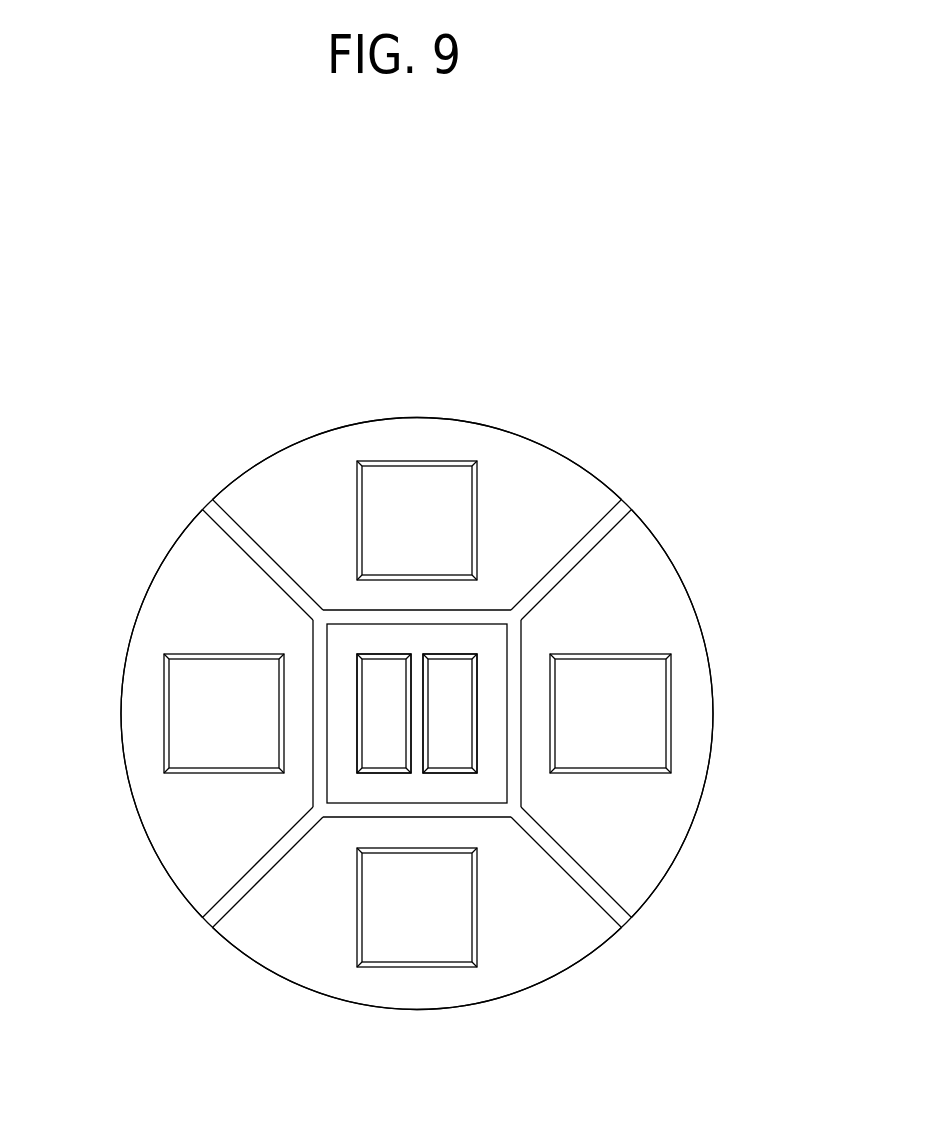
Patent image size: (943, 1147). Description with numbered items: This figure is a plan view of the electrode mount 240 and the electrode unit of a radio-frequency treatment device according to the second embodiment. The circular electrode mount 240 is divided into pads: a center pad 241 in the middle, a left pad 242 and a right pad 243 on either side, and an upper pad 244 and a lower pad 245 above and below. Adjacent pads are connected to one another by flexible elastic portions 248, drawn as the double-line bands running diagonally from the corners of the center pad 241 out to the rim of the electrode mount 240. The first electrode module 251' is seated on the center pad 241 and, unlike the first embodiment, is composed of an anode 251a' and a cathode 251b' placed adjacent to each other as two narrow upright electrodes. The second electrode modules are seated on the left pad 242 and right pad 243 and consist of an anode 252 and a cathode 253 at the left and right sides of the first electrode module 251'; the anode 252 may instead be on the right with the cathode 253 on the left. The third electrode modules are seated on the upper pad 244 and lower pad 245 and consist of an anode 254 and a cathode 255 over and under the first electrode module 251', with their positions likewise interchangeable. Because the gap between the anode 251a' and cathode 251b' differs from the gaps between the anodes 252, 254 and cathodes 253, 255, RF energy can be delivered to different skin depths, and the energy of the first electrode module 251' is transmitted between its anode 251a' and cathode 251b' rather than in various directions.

The electrode mount 240 is at (600, 477).
The center pad 241 is at (340, 637).
The left pad 242 is at (175, 592).
The right pad 243 is at (652, 600).
The upper pad 244 is at (545, 510).
The lower pad 245 is at (290, 940).
The flexible elastic portion 248 is at (215, 518).
The first electrode module 251' is at (601, 830).
The anode 251a' is at (559, 836).
The cathode 251b' is at (592, 783).
The anode of second electrode module 252 is at (187, 707).
The cathode of second electrode module 253 is at (650, 722).
The anode of third electrode module 254 is at (413, 490).
The cathode of third electrode module 255 is at (419, 945).